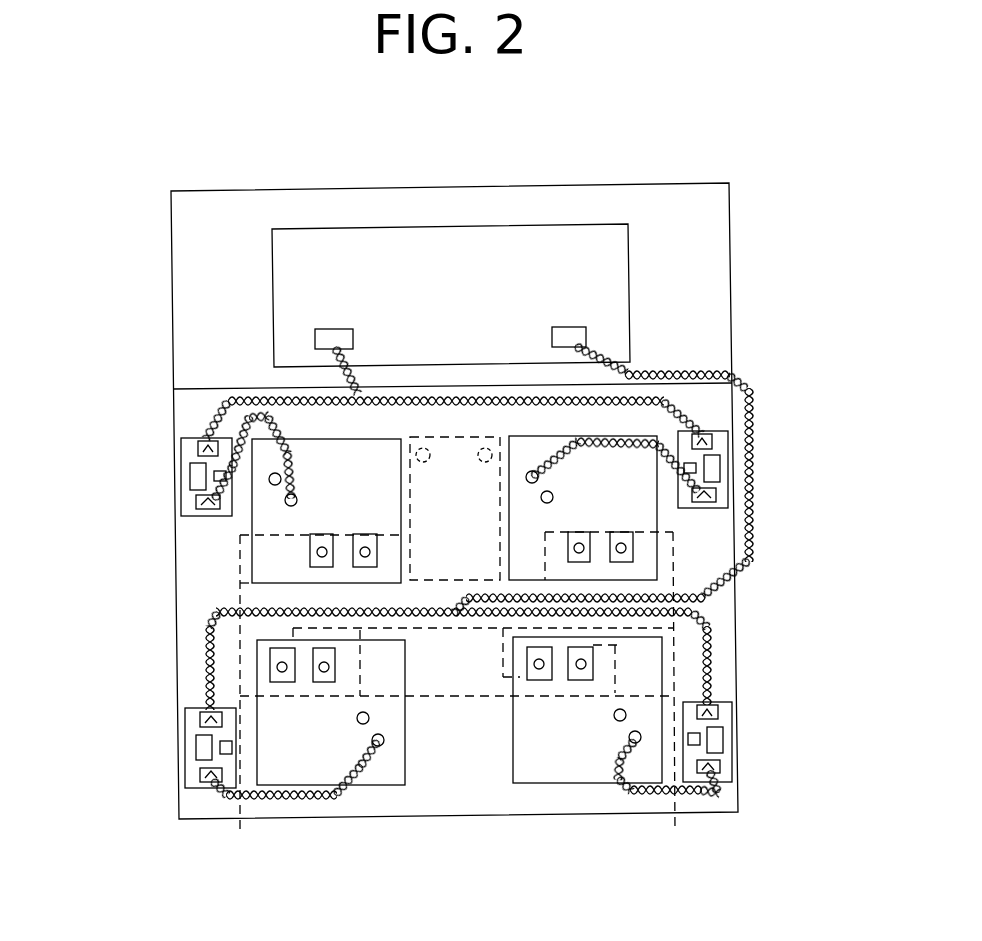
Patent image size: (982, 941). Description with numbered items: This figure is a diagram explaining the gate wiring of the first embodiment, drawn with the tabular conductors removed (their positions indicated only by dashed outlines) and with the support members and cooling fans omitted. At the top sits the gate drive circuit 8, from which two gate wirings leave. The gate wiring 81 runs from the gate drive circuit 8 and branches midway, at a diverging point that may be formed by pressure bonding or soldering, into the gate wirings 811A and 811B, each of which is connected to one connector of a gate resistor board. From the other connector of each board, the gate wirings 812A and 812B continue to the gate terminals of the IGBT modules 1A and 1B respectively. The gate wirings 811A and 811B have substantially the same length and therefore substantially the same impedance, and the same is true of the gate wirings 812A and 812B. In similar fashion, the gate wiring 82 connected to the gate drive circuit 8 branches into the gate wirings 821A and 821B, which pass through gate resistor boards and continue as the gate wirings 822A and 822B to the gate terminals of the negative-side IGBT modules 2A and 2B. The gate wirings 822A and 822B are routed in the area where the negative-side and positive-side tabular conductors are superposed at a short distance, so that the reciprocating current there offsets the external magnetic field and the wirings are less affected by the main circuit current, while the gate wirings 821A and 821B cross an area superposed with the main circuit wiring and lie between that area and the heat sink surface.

The gate drive circuit 8 is at (433, 256).
The gate wiring 81 is at (365, 366).
The gate wiring 82 is at (640, 368).
The gate wiring 811A is at (205, 403).
The gate wiring 811B is at (730, 410).
The gate wiring 812A is at (232, 466).
The gate wiring 812B is at (610, 448).
The gate wiring 821A is at (212, 652).
The gate wiring 821B is at (707, 672).
The gate wiring 822A is at (268, 800).
The gate wiring 822B is at (637, 795).
The IGBT module 1A is at (326, 511).
The IGBT module 1B is at (583, 508).
The IGBT module 2A is at (331, 712).
The IGBT module 2B is at (587, 710).